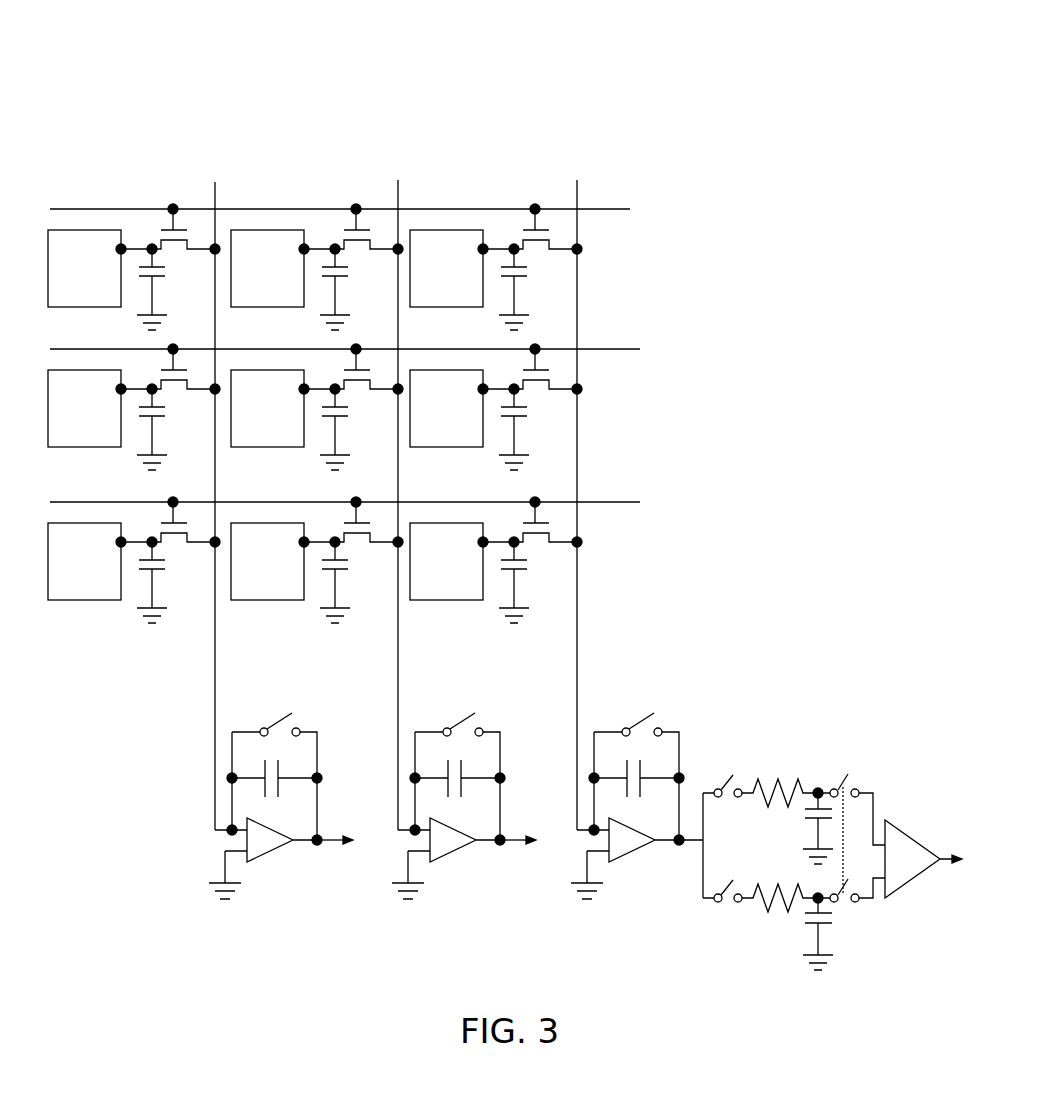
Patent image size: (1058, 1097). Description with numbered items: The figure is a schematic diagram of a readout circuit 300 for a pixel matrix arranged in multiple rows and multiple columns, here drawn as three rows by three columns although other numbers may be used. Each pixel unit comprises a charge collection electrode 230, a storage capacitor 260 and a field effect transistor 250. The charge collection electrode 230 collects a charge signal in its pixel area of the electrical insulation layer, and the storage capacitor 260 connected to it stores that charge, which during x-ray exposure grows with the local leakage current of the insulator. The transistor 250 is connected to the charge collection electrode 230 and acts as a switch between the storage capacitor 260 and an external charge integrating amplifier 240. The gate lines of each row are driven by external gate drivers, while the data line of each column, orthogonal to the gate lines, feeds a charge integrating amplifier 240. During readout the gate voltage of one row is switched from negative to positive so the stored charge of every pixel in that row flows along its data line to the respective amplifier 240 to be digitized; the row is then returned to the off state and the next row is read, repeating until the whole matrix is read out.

The readout circuit 300 is at (502, 490).
The charge collection electrode 230 is at (98, 590).
The charge integrating amplifier 240 is at (195, 840).
The field effect transistor 250 is at (560, 238).
The storage capacitor 260 is at (532, 414).